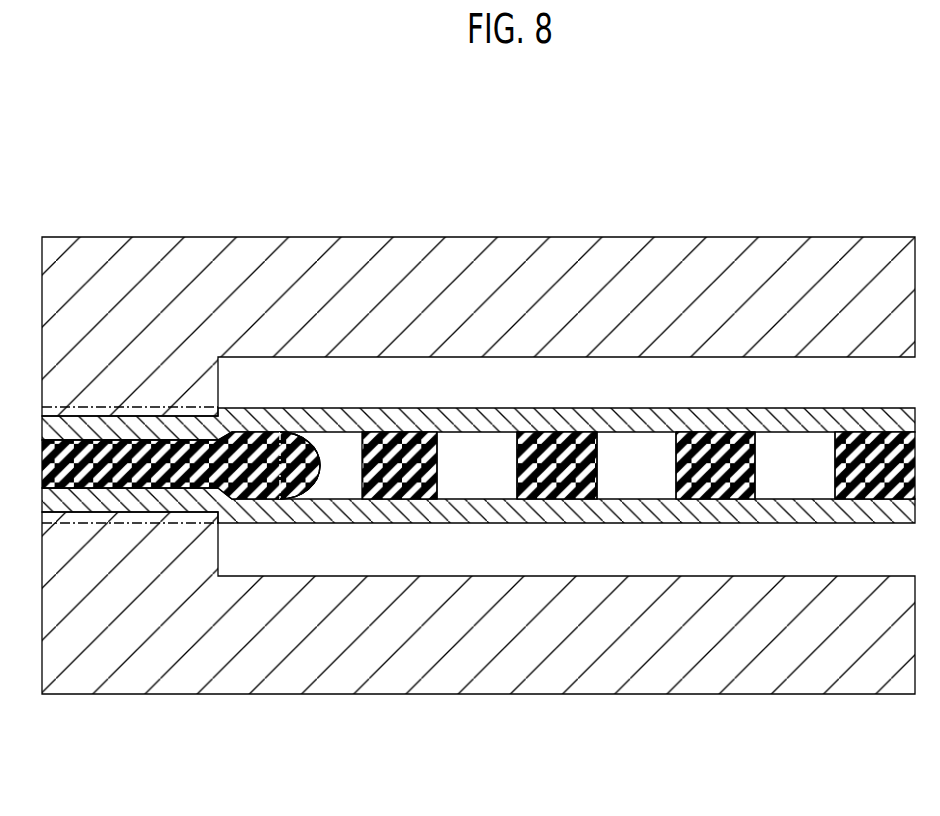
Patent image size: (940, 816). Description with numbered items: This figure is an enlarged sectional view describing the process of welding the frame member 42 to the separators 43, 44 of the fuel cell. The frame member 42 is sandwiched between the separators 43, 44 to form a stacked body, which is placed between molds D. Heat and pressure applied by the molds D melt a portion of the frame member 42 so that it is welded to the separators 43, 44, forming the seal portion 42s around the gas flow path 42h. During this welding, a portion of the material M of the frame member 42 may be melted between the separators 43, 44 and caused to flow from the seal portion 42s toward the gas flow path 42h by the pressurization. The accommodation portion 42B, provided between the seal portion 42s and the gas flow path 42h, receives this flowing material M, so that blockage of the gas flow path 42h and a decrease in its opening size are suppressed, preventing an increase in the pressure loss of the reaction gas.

The frame member 42 is at (96, 440).
The seal portion 42s is at (157, 440).
The accommodation portion 42B is at (339, 446).
The separator 43 is at (470, 422).
The separator 44 is at (471, 512).
The gas flow path 42h is at (786, 494).
The material M is at (311, 472).
The mold D is at (768, 268).